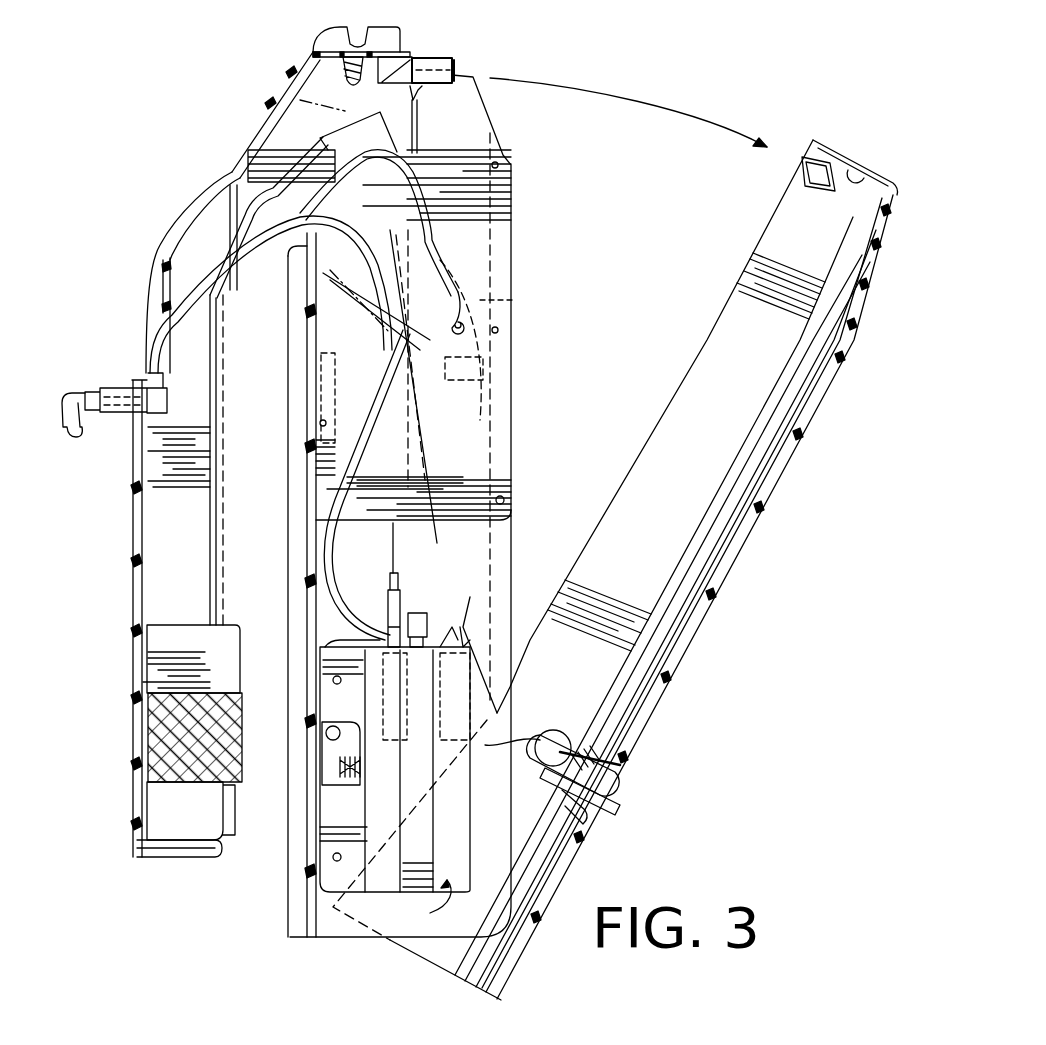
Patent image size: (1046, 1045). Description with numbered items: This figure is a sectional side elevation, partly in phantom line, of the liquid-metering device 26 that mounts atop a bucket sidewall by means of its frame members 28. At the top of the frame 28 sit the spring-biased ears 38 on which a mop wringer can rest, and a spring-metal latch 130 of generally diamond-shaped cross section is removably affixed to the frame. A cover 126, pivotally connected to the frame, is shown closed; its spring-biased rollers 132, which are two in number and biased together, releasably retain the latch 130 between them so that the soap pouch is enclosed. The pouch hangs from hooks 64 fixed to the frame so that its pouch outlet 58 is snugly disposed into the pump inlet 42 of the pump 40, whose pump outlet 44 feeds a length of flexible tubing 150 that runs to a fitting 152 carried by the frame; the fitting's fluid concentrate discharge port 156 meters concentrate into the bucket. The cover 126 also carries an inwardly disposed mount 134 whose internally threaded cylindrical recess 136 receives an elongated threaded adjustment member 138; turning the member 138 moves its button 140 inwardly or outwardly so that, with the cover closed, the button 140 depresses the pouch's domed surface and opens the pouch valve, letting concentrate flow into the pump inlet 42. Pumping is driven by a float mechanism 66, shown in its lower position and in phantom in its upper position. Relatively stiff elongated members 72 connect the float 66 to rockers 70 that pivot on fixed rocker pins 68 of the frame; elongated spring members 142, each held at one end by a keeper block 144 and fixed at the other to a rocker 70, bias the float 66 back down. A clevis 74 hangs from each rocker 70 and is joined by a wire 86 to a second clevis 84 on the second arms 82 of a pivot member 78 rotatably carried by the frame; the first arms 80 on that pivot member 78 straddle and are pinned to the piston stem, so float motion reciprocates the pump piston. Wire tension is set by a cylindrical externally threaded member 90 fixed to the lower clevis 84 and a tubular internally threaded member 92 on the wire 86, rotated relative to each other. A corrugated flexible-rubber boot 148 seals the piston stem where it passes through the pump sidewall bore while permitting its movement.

The liquid-metering device 26 is at (246, 115).
The frame member 28 is at (200, 192).
The spring-biased ear 38 is at (327, 43).
The pump 40 is at (397, 937).
The pump inlet 42 is at (470, 620).
The pump outlet 44 is at (413, 613).
The pouch outlet 58 is at (500, 720).
The hook 64 is at (420, 89).
The float mechanism 66 is at (200, 625).
The rocker pin 68 is at (552, 307).
The rocker 70 is at (297, 62).
The elongated member 72 is at (262, 358).
The clevis 74 is at (393, 435).
The pivot member 78 is at (313, 722).
The arm 80 is at (313, 780).
The second arm 82 is at (313, 677).
The second clevis 84 is at (431, 626).
The wire 86 is at (390, 547).
The externally-threaded member 90 is at (380, 640).
The tubular internally-threaded member 92 is at (390, 597).
The cover 126 is at (672, 402).
The spring-metal latch 130 is at (432, 58).
The spring-biased roller 132 is at (800, 177).
The mount 134 is at (633, 750).
The cylindrical recess 136 is at (620, 783).
The threaded adjustment member 138 is at (580, 717).
The button 140 is at (533, 757).
The spring member 142 is at (500, 276).
The keeper block 144 is at (510, 412).
The corrugated flexible-rubber boot 148 is at (323, 800).
The flexible tubing 150 is at (343, 410).
The fitting 152 is at (163, 368).
The fluid concentrate discharge port 156 is at (80, 437).